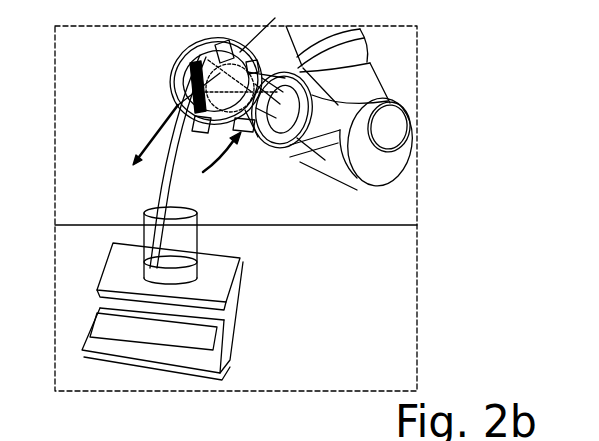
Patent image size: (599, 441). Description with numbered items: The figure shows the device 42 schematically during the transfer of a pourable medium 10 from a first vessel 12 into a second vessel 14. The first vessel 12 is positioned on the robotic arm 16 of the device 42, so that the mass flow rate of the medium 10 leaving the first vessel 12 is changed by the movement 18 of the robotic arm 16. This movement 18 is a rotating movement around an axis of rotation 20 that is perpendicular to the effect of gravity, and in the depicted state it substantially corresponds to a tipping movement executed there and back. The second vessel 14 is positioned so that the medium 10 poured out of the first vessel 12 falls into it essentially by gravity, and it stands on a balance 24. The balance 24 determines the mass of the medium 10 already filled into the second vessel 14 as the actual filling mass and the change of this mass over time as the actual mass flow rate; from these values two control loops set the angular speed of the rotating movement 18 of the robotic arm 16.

The pourable medium 10 is at (181, 174).
The first vessel 12 is at (348, 123).
The second vessel 14 is at (200, 233).
The robotic arm 16 is at (373, 97).
The movement 18 is at (240, 150).
The axis of rotation 20 is at (152, 140).
The balance 24 is at (210, 357).
The device 42 is at (389, 108).